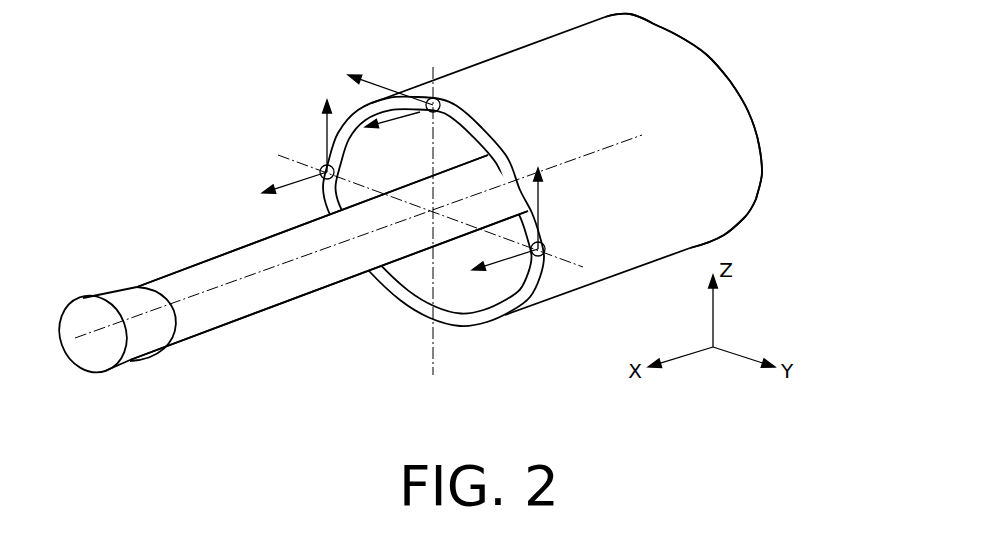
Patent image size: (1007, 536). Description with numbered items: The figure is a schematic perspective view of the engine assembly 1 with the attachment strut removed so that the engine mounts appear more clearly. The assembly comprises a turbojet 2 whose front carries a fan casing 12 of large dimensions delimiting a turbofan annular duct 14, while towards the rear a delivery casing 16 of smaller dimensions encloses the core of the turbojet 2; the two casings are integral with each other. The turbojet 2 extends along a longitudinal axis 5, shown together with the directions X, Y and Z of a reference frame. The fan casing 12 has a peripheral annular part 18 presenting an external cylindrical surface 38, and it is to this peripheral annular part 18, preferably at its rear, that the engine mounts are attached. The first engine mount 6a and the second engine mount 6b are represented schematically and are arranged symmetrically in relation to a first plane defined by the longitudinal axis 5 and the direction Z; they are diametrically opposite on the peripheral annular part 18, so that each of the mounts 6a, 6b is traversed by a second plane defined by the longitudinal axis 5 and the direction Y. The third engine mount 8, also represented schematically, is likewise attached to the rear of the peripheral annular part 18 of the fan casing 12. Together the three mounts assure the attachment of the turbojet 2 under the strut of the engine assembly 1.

The engine assembly 1 is at (185, 128).
The turbojet 2 is at (268, 315).
The longitudinal axis 5 is at (75, 335).
The first engine mount 6a is at (321, 167).
The second engine mount 6b is at (543, 256).
The third engine mount 8 is at (440, 104).
The fan casing 12 is at (727, 183).
The turbofan annular duct 14 is at (413, 278).
The delivery casing 16 is at (228, 265).
The peripheral annular part 18 is at (470, 316).
The external cylindrical surface 38 is at (702, 80).